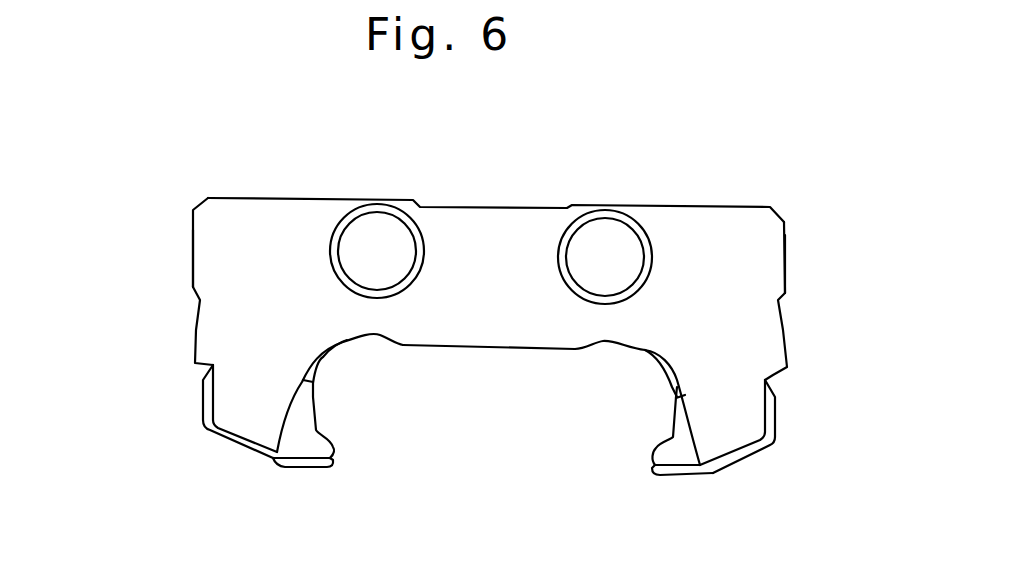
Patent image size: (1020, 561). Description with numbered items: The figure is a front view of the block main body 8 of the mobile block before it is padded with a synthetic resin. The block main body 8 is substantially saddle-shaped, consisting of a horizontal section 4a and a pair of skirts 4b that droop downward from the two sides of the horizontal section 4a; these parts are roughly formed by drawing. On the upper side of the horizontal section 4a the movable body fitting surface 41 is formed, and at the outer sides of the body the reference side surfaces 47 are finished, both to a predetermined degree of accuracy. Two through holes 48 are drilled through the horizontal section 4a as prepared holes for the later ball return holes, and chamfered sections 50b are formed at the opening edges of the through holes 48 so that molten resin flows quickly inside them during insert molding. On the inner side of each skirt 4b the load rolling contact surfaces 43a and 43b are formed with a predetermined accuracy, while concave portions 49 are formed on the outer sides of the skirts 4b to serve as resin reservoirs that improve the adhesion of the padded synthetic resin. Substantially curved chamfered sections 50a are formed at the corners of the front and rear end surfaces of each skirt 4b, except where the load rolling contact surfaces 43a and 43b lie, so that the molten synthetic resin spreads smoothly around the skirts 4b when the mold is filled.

The block main body 8 is at (727, 204).
The movable body fitting surface 41 is at (231, 198).
The reference side surface 47 is at (192, 238).
The horizontal section 4a is at (477, 228).
The skirt 4b is at (213, 335).
The through hole 48 is at (363, 220).
The concave portion 49 is at (210, 375).
The chamfered section 50a is at (237, 428).
The chamfered section 50b is at (398, 210).
The load rolling contact surface 43a is at (323, 432).
The load rolling contact surface 43b is at (378, 340).